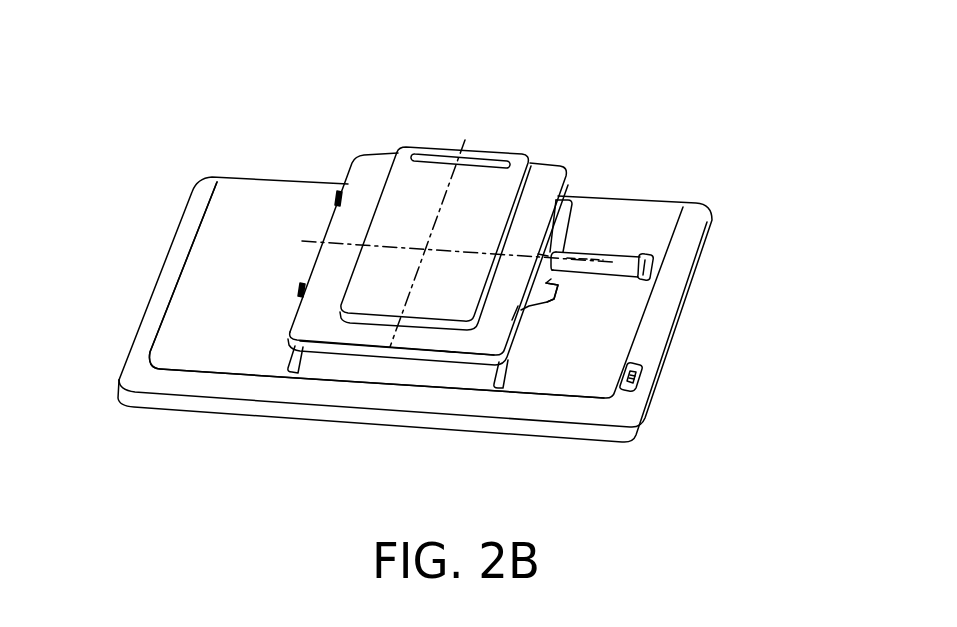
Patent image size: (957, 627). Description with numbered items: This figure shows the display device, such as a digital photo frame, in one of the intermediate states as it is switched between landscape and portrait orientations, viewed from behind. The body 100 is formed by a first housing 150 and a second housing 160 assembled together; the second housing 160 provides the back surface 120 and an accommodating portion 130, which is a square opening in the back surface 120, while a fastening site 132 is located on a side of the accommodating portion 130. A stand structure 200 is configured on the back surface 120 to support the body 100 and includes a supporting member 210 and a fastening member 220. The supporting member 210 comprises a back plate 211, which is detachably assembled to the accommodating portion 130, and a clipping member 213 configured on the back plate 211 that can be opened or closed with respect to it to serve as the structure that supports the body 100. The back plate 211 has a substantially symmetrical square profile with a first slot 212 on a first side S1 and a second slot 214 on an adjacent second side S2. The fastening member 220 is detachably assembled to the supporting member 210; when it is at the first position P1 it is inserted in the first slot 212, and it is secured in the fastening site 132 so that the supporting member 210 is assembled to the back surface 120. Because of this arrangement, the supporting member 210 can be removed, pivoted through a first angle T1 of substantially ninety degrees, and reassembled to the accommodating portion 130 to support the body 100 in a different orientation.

The body 100 is at (463, 274).
The back surface 120 is at (273, 203).
The accommodating portion 130 is at (352, 364).
The fastening site 132 is at (549, 297).
The first housing 150 is at (674, 328).
The second housing 160 is at (690, 236).
The stand structure 200 is at (497, 250).
The supporting member 210 is at (429, 270).
The back plate 211 is at (537, 185).
The first slot 212 is at (572, 253).
The clipping member 213 is at (490, 180).
The second slot 214 is at (390, 348).
The fastening member 220 is at (648, 256).
The first side S1 is at (518, 309).
The second side S2 is at (447, 350).
The first position P1 is at (518, 254).
The first angle T1 is at (450, 253).